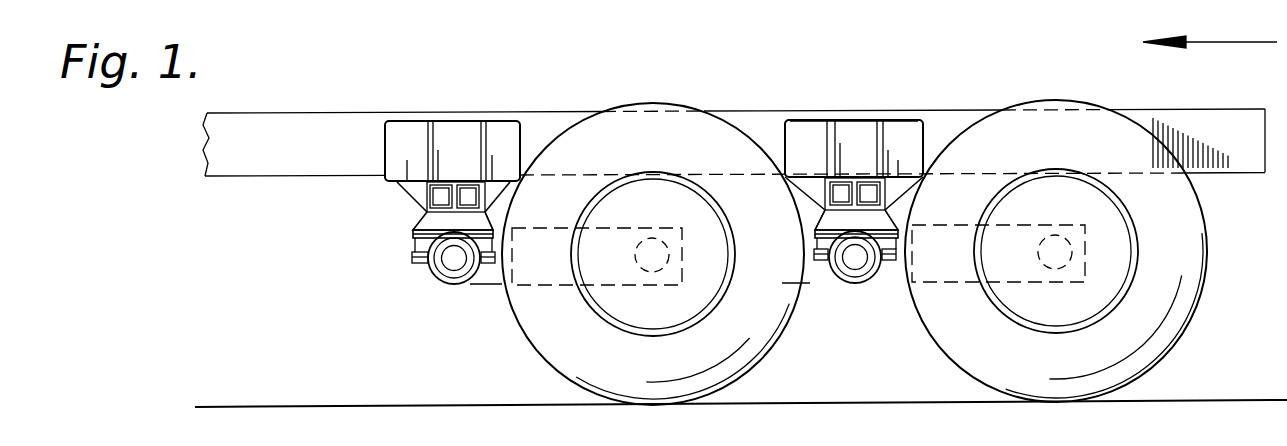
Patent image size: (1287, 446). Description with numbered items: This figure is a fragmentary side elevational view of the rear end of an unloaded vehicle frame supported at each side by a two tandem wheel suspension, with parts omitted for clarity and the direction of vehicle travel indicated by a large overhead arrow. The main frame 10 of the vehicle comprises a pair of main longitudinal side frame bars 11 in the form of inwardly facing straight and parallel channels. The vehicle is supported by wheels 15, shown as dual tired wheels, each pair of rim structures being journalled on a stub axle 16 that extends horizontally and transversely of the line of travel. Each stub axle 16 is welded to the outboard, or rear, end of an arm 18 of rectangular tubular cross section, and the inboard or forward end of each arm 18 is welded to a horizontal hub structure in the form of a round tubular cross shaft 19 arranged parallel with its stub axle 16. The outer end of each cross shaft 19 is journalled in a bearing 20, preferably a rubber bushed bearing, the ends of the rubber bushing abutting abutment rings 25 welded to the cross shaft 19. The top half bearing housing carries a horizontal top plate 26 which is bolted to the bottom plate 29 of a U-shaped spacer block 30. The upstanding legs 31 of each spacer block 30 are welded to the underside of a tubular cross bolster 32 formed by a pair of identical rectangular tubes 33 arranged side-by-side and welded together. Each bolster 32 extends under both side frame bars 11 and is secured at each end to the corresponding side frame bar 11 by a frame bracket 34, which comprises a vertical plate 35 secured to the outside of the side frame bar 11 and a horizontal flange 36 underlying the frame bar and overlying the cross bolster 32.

The main frame 10 is at (1184, 96).
The main longitudinal side frame bar 11 is at (205, 145).
The wheel 15 is at (652, 115).
The stub axle 16 is at (655, 238).
The arm 18 is at (552, 288).
The cross shaft 19 is at (455, 280).
The bearing 20 is at (380, 288).
The abutment ring 25 is at (436, 279).
The top plate 26 is at (413, 254).
The bottom plate 29 is at (412, 232).
The spacer block 30 is at (412, 219).
The upstanding leg 31 is at (487, 225).
The cross bolster 32 is at (400, 192).
The tube 33 is at (470, 185).
The frame bracket 34 is at (914, 105).
The vertical plate 35 is at (395, 128).
The horizontal flange 36 is at (497, 190).